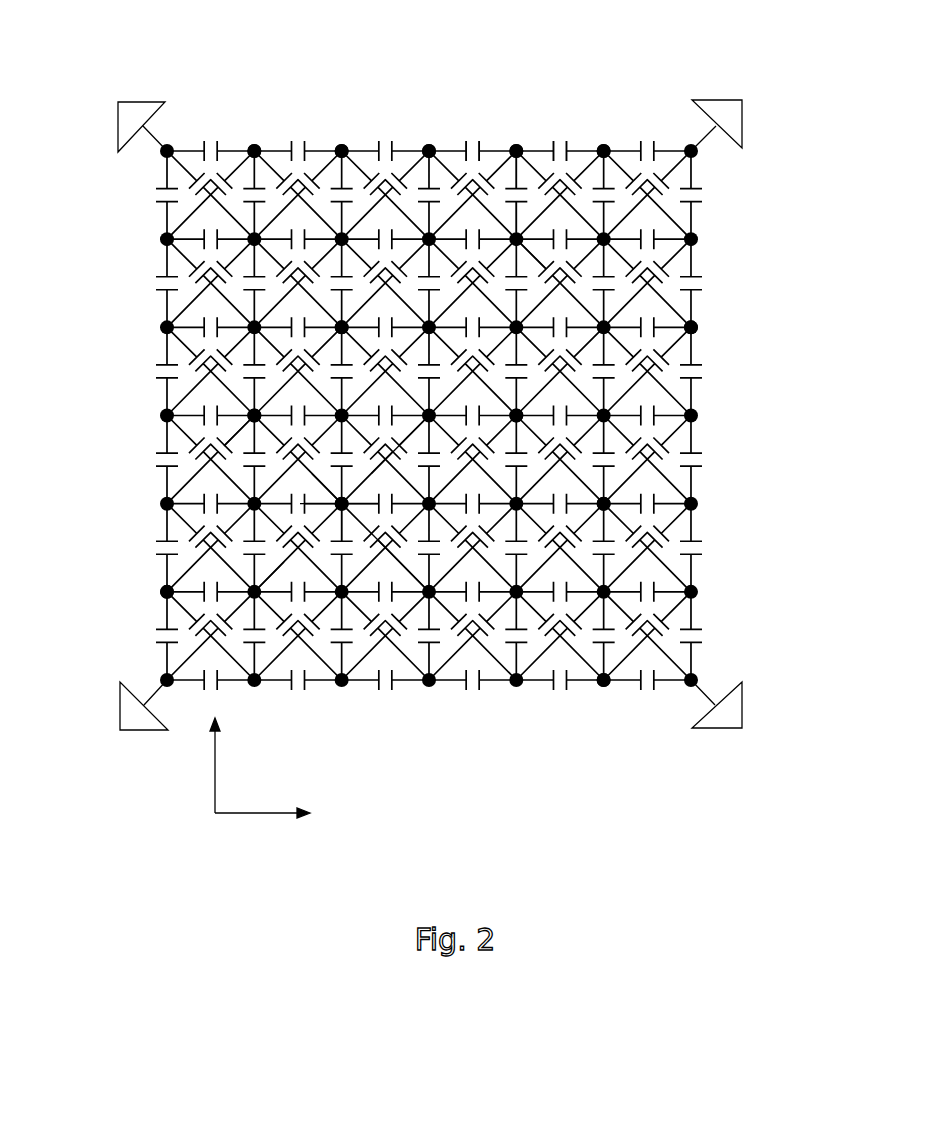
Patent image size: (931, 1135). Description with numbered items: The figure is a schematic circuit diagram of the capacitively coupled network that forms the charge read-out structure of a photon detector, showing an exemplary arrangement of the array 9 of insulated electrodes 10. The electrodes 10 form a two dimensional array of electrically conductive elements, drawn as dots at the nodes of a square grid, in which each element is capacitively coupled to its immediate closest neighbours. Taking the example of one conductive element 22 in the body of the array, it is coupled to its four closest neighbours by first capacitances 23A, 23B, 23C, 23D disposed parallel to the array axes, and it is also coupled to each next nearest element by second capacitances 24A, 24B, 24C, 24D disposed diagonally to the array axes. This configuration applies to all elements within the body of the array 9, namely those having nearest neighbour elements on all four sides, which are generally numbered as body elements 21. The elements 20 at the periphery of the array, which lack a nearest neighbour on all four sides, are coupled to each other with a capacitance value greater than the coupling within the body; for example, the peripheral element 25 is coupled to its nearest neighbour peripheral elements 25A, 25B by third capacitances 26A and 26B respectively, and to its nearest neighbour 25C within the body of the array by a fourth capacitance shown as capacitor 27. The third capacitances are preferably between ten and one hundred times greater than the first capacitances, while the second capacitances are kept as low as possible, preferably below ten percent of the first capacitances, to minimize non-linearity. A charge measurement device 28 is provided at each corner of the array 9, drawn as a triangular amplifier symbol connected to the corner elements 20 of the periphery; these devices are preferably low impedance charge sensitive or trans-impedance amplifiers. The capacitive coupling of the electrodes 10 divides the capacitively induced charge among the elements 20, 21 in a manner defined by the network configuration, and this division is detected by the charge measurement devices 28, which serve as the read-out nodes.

The array 9 is at (117, 191).
The insulated electrodes 10 is at (341, 144).
The peripheral elements 20 is at (253, 145).
The body elements 21 is at (338, 325).
The conductive element 22 is at (333, 497).
The first capacitance 23A is at (305, 487).
The first capacitance 23B is at (312, 500).
The first capacitance 23C is at (340, 573).
The first capacitance 23D is at (406, 507).
The second capacitance 24A is at (243, 432).
The second capacitance 24B is at (280, 572).
The second capacitance 24C is at (398, 558).
The second capacitance 24D is at (397, 470).
The peripheral element 25 is at (517, 144).
The nearest neighbour peripheral element 25A is at (429, 144).
The nearest neighbour peripheral element 25B is at (606, 146).
The nearest neighbour body element 25C is at (535, 257).
The third capacitance 26A is at (493, 135).
The third capacitance 26B is at (583, 135).
The fourth capacitance 27 is at (520, 213).
The charge measurement device 28 is at (138, 102).